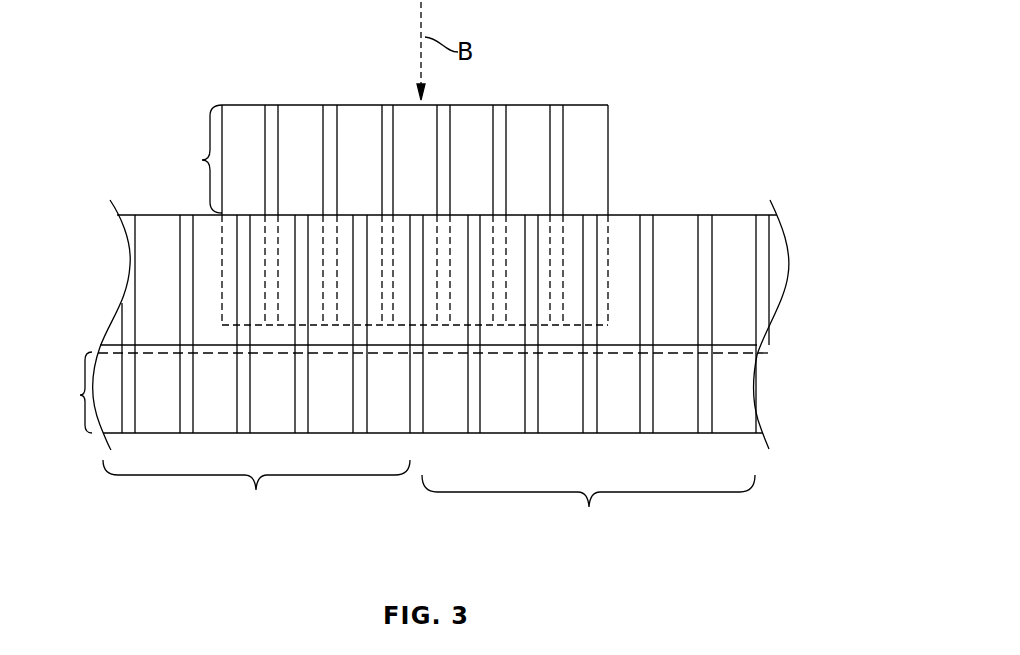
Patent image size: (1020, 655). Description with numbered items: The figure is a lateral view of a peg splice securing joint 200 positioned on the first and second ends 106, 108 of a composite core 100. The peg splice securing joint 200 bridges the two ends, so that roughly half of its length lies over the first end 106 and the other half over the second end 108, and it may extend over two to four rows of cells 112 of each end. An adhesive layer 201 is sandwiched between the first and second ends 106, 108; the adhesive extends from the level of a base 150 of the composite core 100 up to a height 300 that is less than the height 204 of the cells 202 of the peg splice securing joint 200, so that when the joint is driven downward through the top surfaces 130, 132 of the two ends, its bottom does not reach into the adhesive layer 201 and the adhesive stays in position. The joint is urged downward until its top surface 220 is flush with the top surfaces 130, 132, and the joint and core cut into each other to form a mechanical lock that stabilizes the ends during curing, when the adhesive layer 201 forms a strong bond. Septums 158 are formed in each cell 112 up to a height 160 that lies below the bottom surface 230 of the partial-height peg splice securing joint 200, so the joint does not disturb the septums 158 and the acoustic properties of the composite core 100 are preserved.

The composite core 100 is at (75, 432).
The first end 106 is at (256, 493).
The second end 108 is at (588, 508).
The cells 112 is at (150, 215).
The top surface 130 is at (118, 213).
The top surface 132 is at (706, 214).
The base 150 is at (243, 434).
The septums 158 is at (730, 390).
The height 160 is at (738, 345).
The peg splice securing joint 200 is at (562, 104).
The adhesive layer 201 is at (413, 434).
The cells 202 is at (247, 105).
The height 204 is at (188, 159).
The top surface 220 is at (302, 105).
The bottom surface 230 is at (543, 323).
The height 300 is at (402, 392).